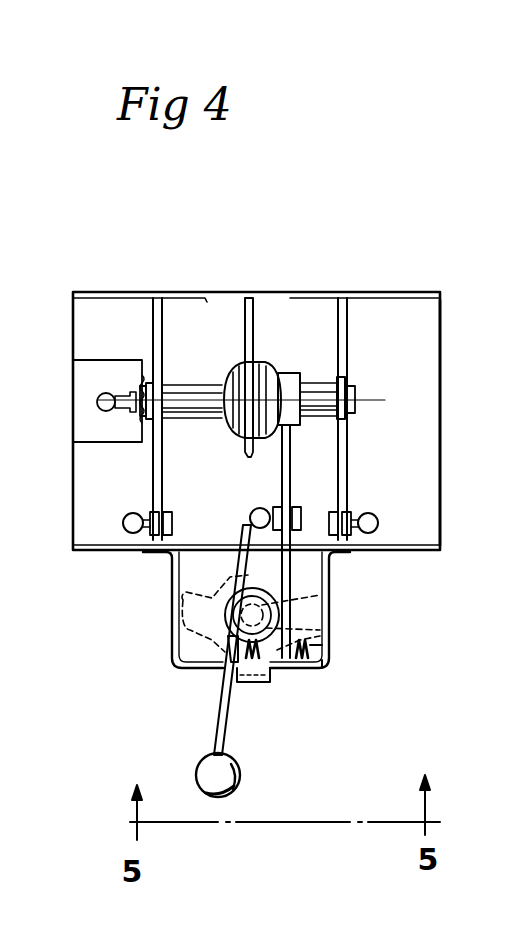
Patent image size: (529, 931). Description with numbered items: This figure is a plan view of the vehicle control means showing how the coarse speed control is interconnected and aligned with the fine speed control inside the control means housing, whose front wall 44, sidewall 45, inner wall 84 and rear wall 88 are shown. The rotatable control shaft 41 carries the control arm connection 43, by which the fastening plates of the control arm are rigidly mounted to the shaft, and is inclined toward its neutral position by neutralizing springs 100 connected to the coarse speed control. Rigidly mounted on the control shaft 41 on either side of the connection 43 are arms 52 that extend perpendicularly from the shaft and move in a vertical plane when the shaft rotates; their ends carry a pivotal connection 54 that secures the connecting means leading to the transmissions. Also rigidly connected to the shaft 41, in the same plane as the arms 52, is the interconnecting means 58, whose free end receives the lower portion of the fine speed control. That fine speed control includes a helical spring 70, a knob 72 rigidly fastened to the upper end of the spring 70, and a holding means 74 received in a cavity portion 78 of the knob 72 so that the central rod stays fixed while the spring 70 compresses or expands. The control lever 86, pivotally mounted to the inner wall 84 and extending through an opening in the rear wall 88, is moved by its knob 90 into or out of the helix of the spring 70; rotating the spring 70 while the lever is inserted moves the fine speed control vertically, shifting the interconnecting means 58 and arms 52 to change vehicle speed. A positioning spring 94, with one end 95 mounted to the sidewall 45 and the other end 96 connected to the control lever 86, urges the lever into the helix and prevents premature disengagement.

The rotatable control shaft 41 is at (318, 390).
The control arm connection 43 is at (285, 380).
The front wall 44 is at (370, 292).
The sidewall 45 is at (442, 455).
The arms 52 is at (152, 468).
The pivotal connection 54 is at (122, 522).
The interconnecting means 58 is at (282, 472).
The spring 70 is at (322, 593).
The knob 72 is at (175, 615).
The holding means 74 is at (290, 598).
The cavity portion 78 is at (320, 625).
The inner wall 84 is at (123, 558).
The control lever 86 is at (226, 710).
The rear wall 88 is at (272, 678).
The knob 90 is at (240, 775).
The positioning spring 94 is at (325, 667).
The end 95 is at (328, 650).
The end 96 is at (200, 668).
The neutralizing springs 100 is at (247, 520).